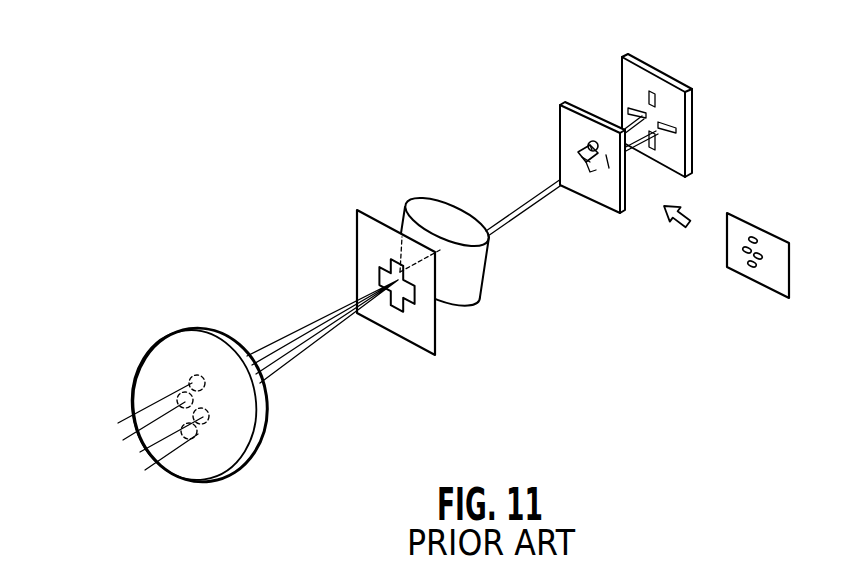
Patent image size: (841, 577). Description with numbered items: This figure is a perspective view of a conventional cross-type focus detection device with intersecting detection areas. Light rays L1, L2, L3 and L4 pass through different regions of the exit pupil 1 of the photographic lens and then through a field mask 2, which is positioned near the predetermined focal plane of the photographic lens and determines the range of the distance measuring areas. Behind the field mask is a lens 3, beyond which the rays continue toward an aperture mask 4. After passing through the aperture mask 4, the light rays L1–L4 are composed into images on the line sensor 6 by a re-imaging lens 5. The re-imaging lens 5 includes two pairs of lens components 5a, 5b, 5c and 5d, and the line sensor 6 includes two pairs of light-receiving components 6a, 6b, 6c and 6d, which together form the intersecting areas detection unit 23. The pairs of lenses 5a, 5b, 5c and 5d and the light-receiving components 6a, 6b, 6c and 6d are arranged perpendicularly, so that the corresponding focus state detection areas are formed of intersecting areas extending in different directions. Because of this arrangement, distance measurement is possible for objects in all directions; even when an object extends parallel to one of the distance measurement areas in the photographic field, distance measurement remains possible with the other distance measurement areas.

The exit pupil 1 is at (177, 345).
The field mask 2 is at (425, 330).
The lens 3 is at (485, 272).
The aperture mask 4 is at (765, 278).
The re-imaging lens 5 is at (569, 162).
The lens component 5a is at (590, 145).
The lens component 5b is at (588, 173).
The lens component 5c is at (578, 155).
The lens component 5d is at (607, 160).
The line sensor 6 is at (652, 94).
The light-receiving component 6a is at (653, 92).
The light-receiving component 6b is at (656, 142).
The light-receiving component 6c is at (635, 112).
The light-receiving component 6d is at (672, 127).
The intersecting areas detection unit 23 is at (709, 81).
The light ray L1 is at (128, 438).
The light ray L2 is at (143, 452).
The light ray L3 is at (118, 423).
The light ray L4 is at (157, 467).